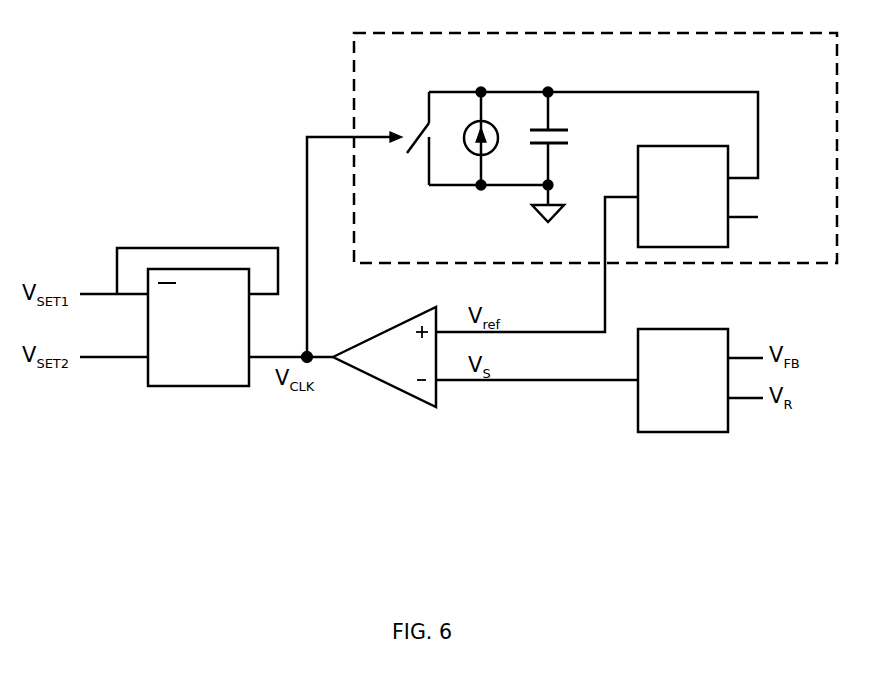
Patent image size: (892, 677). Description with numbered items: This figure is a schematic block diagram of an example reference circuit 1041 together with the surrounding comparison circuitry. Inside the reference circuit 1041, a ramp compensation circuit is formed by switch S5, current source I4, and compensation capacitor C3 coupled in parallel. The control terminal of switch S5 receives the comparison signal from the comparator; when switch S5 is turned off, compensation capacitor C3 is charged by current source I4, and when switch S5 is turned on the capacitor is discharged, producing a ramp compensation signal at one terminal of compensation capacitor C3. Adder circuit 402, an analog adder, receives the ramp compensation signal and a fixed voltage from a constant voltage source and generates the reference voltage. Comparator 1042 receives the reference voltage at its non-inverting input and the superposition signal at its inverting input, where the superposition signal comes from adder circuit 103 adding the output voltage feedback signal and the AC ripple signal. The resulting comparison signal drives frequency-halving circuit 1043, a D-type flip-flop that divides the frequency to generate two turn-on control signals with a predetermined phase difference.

The reference circuit 1041 is at (822, 72).
The adder circuit 402 is at (700, 235).
The adder circuit 103 is at (700, 418).
The comparator 1042 is at (398, 393).
The frequency-halving circuit 1043 is at (165, 386).
The switch S5 is at (433, 138).
The current source I4 is at (487, 138).
The compensation capacitor C3 is at (555, 138).